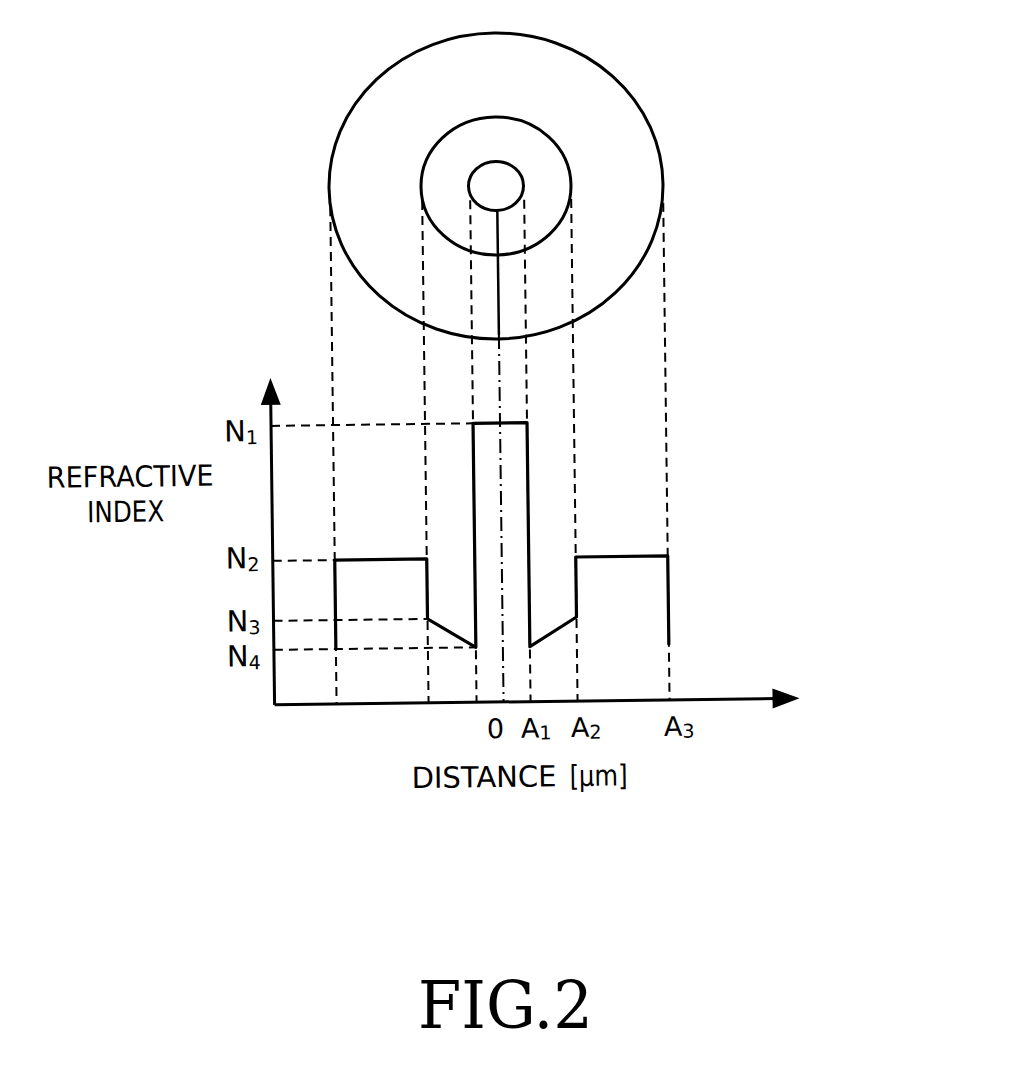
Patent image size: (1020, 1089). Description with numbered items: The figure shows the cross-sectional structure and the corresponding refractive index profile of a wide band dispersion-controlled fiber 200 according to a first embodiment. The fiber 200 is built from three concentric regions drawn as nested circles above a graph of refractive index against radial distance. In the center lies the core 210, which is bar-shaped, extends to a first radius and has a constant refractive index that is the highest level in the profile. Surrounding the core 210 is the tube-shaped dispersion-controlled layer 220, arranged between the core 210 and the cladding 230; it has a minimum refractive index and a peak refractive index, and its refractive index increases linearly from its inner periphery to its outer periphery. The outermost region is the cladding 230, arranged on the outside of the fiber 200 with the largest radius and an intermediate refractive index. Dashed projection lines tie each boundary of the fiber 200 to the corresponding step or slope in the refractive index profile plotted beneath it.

The wide band dispersion-controlled fiber 200 is at (456, 171).
The core 210 is at (486, 181).
The dispersion-controlled layer 220 is at (545, 160).
The cladding 230 is at (638, 171).